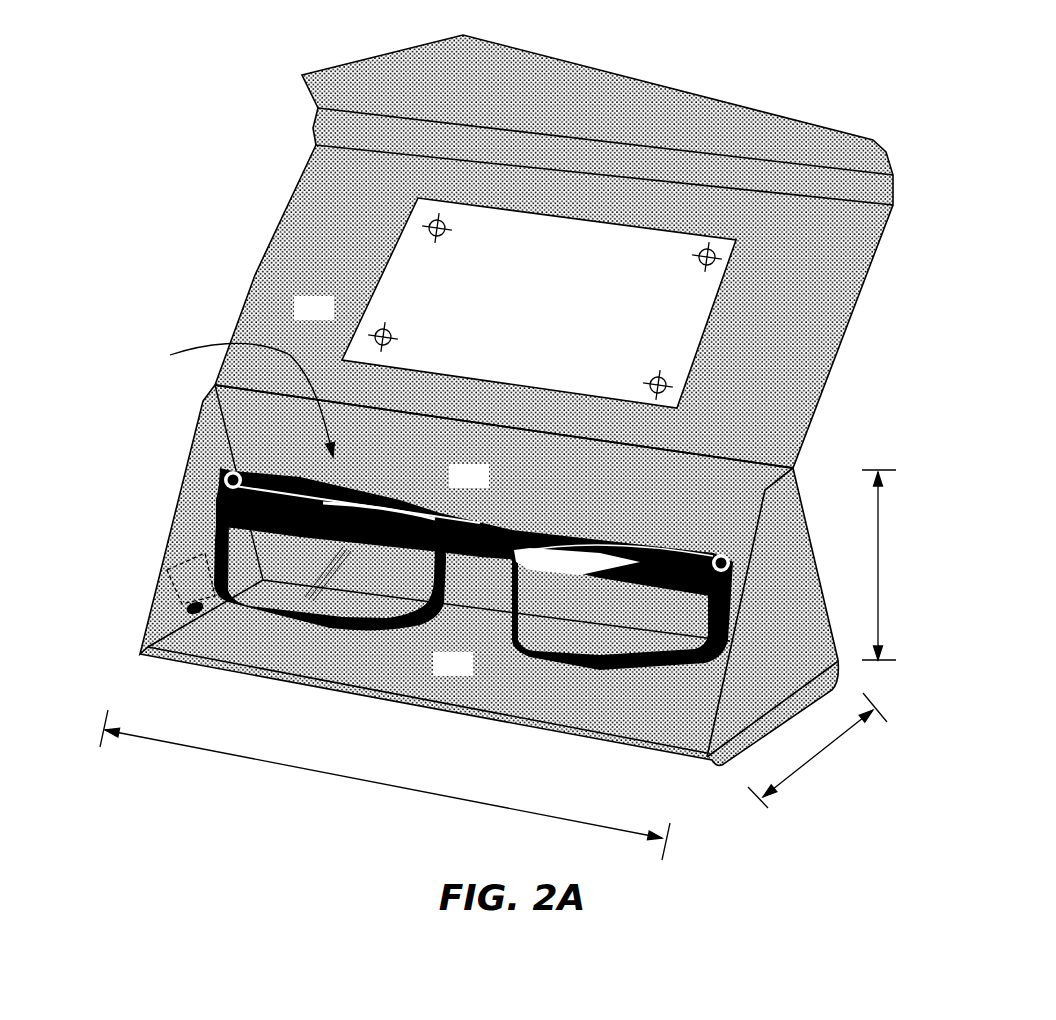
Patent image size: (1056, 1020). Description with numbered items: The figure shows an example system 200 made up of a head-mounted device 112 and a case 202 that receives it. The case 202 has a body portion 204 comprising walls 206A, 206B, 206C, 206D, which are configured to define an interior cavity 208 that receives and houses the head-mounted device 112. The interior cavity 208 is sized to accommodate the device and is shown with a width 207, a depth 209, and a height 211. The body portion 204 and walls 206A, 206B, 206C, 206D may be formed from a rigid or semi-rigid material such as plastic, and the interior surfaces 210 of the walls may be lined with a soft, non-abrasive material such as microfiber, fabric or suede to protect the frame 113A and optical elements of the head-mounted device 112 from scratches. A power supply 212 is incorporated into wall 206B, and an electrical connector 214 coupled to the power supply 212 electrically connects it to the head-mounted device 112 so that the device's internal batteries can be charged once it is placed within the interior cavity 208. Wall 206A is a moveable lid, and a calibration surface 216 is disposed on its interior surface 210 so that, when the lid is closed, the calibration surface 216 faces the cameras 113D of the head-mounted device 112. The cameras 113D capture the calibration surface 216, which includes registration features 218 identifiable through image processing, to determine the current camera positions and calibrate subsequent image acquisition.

The system 200 is at (537, 447).
The case 202 is at (486, 416).
The body portion 204 is at (790, 547).
The wall 206A is at (275, 270).
The wall 206B is at (178, 522).
The wall 206C is at (515, 712).
The wall 206D is at (745, 632).
The width 207 is at (337, 777).
The interior cavity 208 is at (234, 400).
The depth 209 is at (817, 767).
The interior surfaces 210 is at (330, 318).
The height 211 is at (880, 582).
The power supply 212 is at (195, 568).
The electrical connector 214 is at (188, 610).
The calibration surface 216 is at (547, 318).
The registration features 218 is at (700, 263).
The head-mounted device 112 is at (423, 578).
The frame 113A is at (557, 522).
The cameras 113D is at (225, 477).